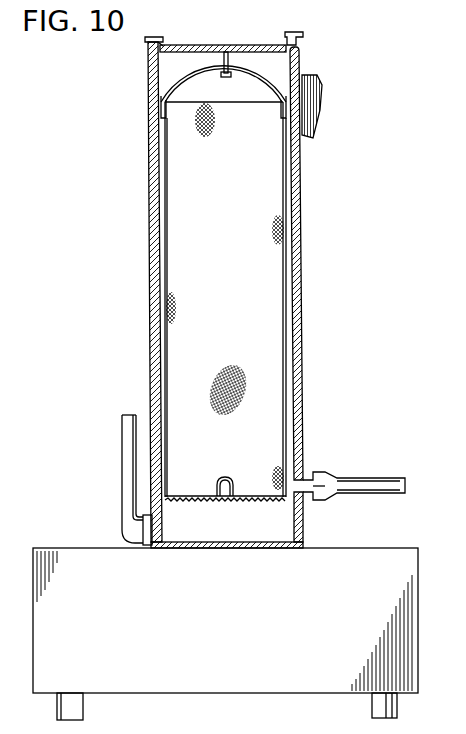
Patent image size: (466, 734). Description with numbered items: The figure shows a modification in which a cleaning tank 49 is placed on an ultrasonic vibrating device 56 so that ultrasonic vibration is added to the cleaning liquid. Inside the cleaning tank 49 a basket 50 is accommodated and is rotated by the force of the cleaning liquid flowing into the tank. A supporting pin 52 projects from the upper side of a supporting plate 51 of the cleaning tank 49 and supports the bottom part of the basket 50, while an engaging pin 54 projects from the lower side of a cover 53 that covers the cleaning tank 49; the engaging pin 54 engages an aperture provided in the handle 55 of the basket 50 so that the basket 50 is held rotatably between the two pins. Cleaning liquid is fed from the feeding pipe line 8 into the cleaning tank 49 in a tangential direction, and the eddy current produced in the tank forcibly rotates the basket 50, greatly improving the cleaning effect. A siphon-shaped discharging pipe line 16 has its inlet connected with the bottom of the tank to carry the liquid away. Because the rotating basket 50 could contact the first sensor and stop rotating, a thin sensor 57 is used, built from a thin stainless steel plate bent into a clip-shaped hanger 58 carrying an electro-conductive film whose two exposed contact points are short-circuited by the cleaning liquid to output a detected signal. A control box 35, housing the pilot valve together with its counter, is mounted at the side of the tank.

The feeding pipe line 8 is at (380, 478).
The discharging pipe line 16 is at (128, 445).
The control box 35 is at (315, 105).
The cleaning tank 49 is at (300, 290).
The basket 50 is at (160, 228).
The supporting plate 51 is at (262, 500).
The supporting pin 52 is at (216, 497).
The cover 53 is at (208, 45).
The engaging pin 54 is at (232, 46).
The handle 55 is at (178, 72).
The ultrasonic vibrating device 56 is at (70, 548).
The sensor 57 is at (278, 95).
The clip-shaped hanger 58 is at (296, 45).